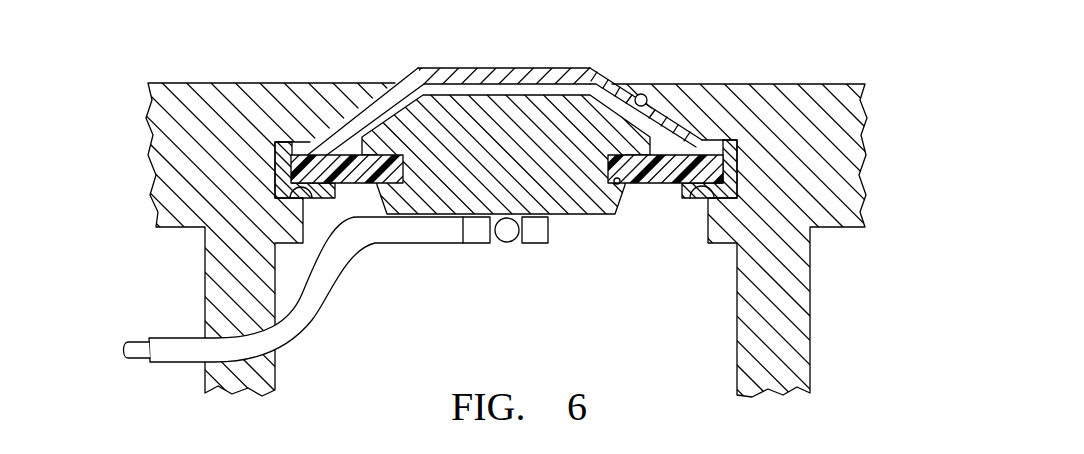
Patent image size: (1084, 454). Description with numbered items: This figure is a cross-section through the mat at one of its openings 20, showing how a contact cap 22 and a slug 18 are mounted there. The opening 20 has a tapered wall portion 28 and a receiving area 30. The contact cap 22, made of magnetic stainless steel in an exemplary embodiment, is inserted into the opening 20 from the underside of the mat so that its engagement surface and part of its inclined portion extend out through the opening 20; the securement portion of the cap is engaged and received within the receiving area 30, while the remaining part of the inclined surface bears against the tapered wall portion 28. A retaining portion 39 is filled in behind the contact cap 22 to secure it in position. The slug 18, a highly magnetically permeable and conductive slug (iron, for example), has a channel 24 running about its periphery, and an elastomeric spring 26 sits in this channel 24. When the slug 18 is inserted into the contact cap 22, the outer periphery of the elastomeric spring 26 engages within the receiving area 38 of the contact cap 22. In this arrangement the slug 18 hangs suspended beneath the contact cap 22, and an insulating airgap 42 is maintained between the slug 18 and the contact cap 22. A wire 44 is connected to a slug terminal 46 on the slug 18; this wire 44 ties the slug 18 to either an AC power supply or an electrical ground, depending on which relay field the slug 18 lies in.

The slug 18 is at (560, 112).
The opening 20 is at (368, 108).
The contact cap 22 is at (462, 68).
The channel 24 is at (624, 227).
The elastomeric spring 26 is at (677, 180).
The tapered wall portion 28 is at (646, 97).
The receiving area 30 is at (734, 150).
The receiving area 38 is at (346, 178).
The retaining portion 39 is at (686, 200).
The insulating airgap 42 is at (492, 90).
The wire 44 is at (392, 234).
The slug terminal 46 is at (479, 244).